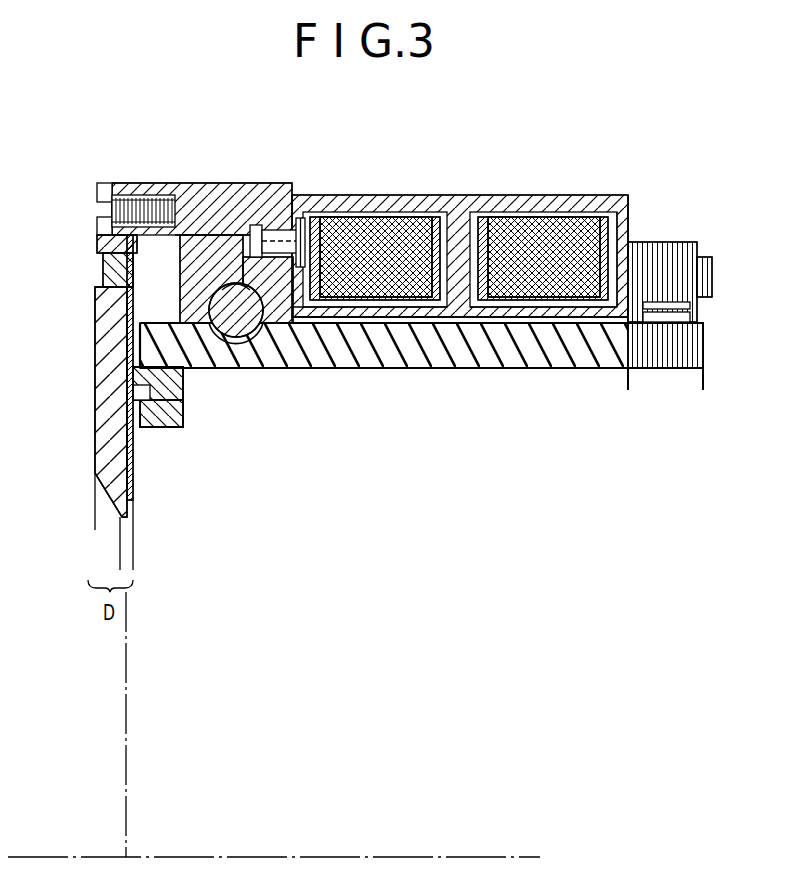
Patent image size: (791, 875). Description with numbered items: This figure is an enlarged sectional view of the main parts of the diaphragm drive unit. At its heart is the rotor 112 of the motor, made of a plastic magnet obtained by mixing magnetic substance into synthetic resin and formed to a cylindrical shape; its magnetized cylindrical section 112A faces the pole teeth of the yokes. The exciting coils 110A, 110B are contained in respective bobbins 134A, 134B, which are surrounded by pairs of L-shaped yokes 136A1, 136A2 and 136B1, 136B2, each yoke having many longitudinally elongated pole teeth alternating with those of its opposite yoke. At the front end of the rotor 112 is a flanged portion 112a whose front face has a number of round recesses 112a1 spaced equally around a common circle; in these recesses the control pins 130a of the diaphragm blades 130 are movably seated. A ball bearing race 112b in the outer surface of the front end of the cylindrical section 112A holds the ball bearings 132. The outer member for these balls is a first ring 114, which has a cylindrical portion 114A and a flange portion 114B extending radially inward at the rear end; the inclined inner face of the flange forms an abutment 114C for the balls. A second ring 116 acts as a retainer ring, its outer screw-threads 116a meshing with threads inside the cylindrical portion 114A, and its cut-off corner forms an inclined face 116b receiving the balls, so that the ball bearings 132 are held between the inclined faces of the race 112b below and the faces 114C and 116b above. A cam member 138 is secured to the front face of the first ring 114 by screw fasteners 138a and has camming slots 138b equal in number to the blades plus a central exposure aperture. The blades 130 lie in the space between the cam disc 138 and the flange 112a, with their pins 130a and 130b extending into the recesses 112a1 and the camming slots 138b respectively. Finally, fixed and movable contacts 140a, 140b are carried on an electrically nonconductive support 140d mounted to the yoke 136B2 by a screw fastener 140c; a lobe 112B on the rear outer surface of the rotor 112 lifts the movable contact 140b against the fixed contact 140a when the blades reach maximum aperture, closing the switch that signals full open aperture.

The exciting coil 110A is at (401, 306).
The exciting coil 110B is at (545, 306).
The rotor 112 is at (603, 347).
The cylindrical section of rotor 112A is at (372, 343).
The lobe 112B is at (670, 347).
The flanged portion 112a is at (183, 410).
The round recess 112a1 is at (163, 395).
The ball bearing race 112b is at (247, 343).
The first ring 114 is at (268, 210).
The cylindrical portion 114A is at (186, 210).
The flange portion 114B is at (326, 322).
The abutment 114C is at (299, 325).
The second ring 116 is at (196, 323).
The screw-threads 116a is at (213, 235).
The inclined face 116b is at (234, 281).
The diaphragm blade 130 is at (133, 490).
The control pin 130a is at (150, 402).
The cam follower pin 130b is at (100, 290).
The ball bearing 132 is at (258, 320).
The bobbin 134A is at (450, 306).
The bobbin 134B is at (512, 306).
The yoke 136A1 is at (298, 195).
The yoke 136A2 is at (380, 200).
The yoke 136B1 is at (537, 203).
The yoke 136B2 is at (625, 213).
The cam member 138 is at (113, 353).
The screw fastener 138a is at (98, 225).
The camming slot 138b is at (103, 268).
The fixed contact 140a is at (683, 300).
The movable contact 140b is at (685, 322).
The screw fastener 140c is at (703, 257).
The support 140d is at (663, 263).